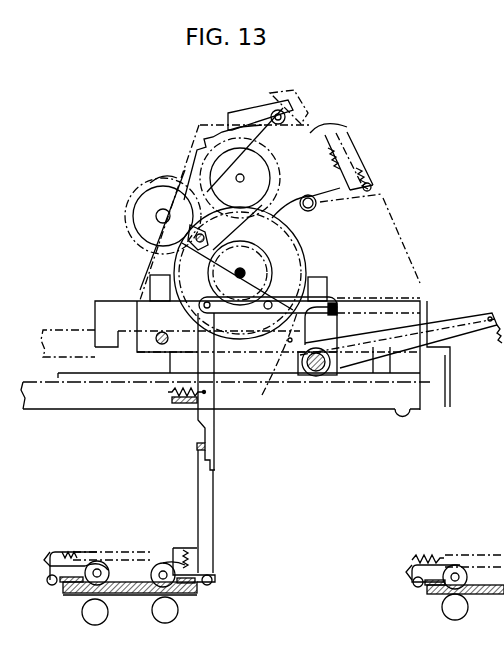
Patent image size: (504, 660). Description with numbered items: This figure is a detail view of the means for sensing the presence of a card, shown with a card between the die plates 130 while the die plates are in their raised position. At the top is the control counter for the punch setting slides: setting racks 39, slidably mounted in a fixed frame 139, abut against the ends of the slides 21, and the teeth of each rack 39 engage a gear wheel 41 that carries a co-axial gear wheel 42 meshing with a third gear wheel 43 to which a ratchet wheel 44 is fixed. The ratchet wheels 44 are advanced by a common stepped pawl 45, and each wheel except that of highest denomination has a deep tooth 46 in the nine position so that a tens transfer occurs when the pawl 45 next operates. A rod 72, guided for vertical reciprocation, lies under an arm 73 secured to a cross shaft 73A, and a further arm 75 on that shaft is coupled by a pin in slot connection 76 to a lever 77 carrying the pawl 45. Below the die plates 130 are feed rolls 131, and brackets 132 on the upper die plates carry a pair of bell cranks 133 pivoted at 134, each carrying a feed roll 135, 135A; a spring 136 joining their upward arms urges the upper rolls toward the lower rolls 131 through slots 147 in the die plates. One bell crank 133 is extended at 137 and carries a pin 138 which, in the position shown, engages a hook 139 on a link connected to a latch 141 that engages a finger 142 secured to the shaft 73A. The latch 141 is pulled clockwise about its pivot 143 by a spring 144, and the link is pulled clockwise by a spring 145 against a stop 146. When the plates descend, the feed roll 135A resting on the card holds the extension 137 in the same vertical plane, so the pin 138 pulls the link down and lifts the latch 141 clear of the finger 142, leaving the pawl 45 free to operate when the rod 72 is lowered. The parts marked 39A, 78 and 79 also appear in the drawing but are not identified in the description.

The slides 21 is at (70, 332).
The setting rack 39 is at (112, 302).
The pin 39A is at (157, 342).
The gear wheel 41 is at (268, 262).
The co-axial gear wheel 42 is at (294, 227).
The third gear wheel 43 is at (343, 133).
The ratchet wheel 44 is at (195, 160).
The stepped pawl 45 is at (252, 108).
The deep tooth 46 is at (220, 138).
The rod 72 is at (445, 395).
The arm 73 is at (452, 320).
The cross shaft 73A is at (320, 374).
The further arm 75 is at (275, 359).
The pin in slot connection 76 is at (238, 283).
The lever 77 is at (298, 100).
The gear 78 is at (128, 213).
The pawl 79 is at (143, 180).
The die plates 130 is at (133, 593).
The feed rolls 131 is at (160, 620).
The brackets 132 is at (65, 584).
The bell cranks 133 is at (50, 556).
The pivot 134 is at (46, 583).
The feed roll 135 is at (97, 562).
The feed roll 135A is at (163, 563).
The spring 136 is at (125, 548).
The extended arm 137 is at (214, 497).
The pin 138 is at (196, 450).
The hook 139 is at (390, 213).
The latch 141 is at (343, 300).
The finger 142 is at (328, 325).
The pivot 143 is at (272, 300).
The spring 144 is at (287, 343).
The spring 145 is at (168, 392).
The stop 146 is at (180, 405).
The slots 147 is at (175, 592).